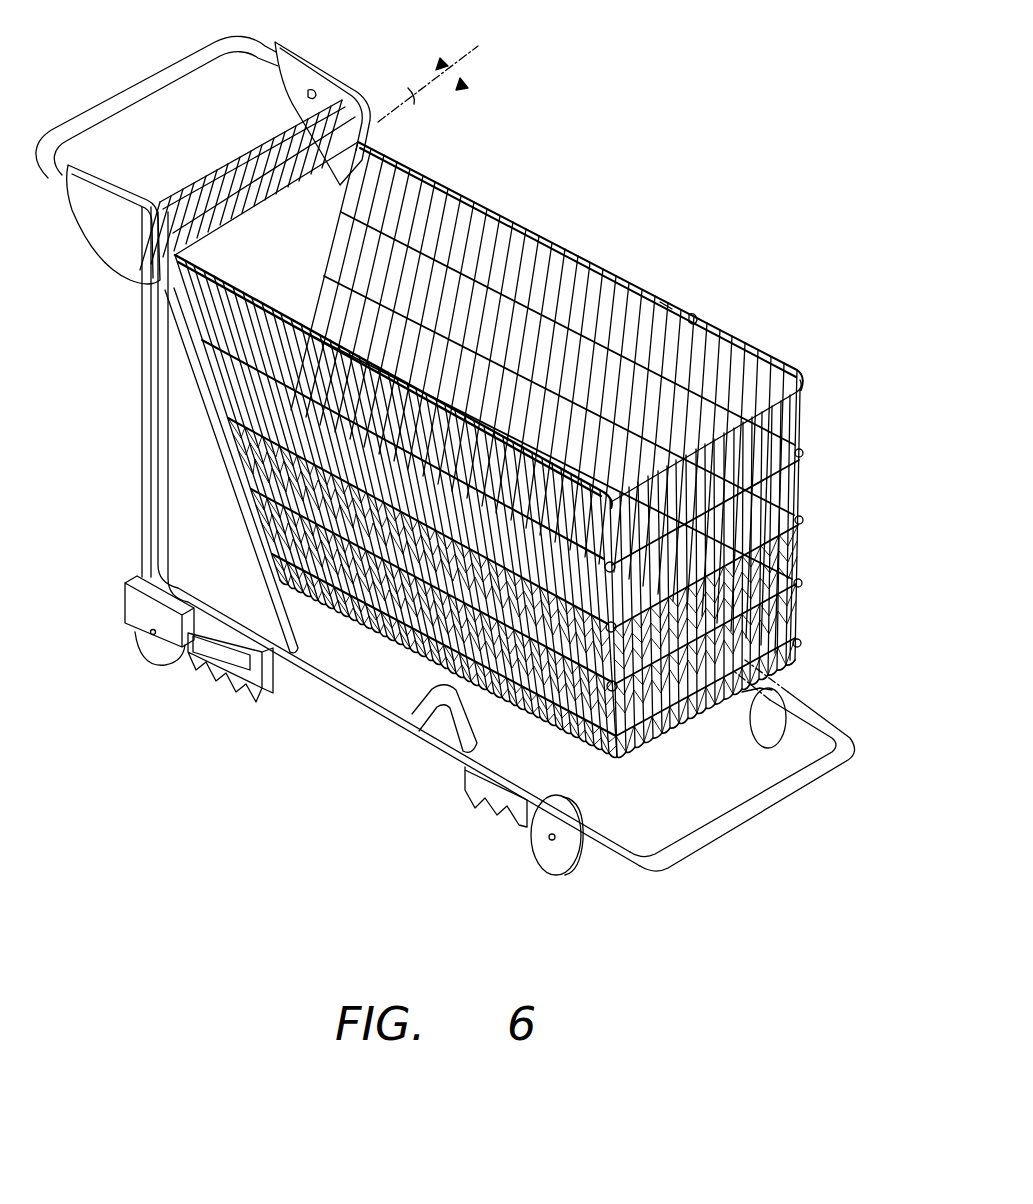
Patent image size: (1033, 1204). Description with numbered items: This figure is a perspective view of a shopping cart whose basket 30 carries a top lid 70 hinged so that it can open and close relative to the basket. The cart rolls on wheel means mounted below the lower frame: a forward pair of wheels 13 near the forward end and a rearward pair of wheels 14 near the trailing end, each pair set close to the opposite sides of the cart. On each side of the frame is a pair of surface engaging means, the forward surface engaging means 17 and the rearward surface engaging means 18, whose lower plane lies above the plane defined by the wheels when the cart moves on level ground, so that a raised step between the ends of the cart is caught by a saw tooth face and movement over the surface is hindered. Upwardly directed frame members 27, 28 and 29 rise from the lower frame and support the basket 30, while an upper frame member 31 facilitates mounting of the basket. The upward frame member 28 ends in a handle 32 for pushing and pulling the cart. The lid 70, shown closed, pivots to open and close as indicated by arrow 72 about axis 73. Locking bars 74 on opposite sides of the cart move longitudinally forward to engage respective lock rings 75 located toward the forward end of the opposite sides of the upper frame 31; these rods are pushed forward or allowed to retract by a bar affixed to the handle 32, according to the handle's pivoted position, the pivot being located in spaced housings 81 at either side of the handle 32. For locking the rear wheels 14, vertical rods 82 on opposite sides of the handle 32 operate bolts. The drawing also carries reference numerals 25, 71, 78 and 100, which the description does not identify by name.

The forward pair of wheels 13 is at (556, 865).
The rearward pair of wheels 14 is at (160, 660).
The surface engaging means 17 is at (500, 818).
The surface engaging means 18 is at (245, 695).
The rear frame loop 25 is at (788, 805).
The upwardly directed frame member 27 is at (167, 473).
The upwardly directed frame member 28 is at (245, 512).
The upwardly directed frame member 29 is at (440, 695).
The basket configuration 30 is at (800, 430).
The upper frame member 31 is at (520, 217).
The handle 32 is at (140, 97).
The lid 70 is at (560, 253).
The rail joint 71 is at (663, 310).
The arrow 72 is at (445, 58).
The axis 73 is at (414, 96).
The locking bars 74 is at (440, 167).
The lock rings 75 is at (697, 320).
The handle clip 78 is at (308, 93).
The housings 81 is at (305, 60).
The vertical rods 82 is at (145, 340).
The cross bar 100 is at (290, 148).